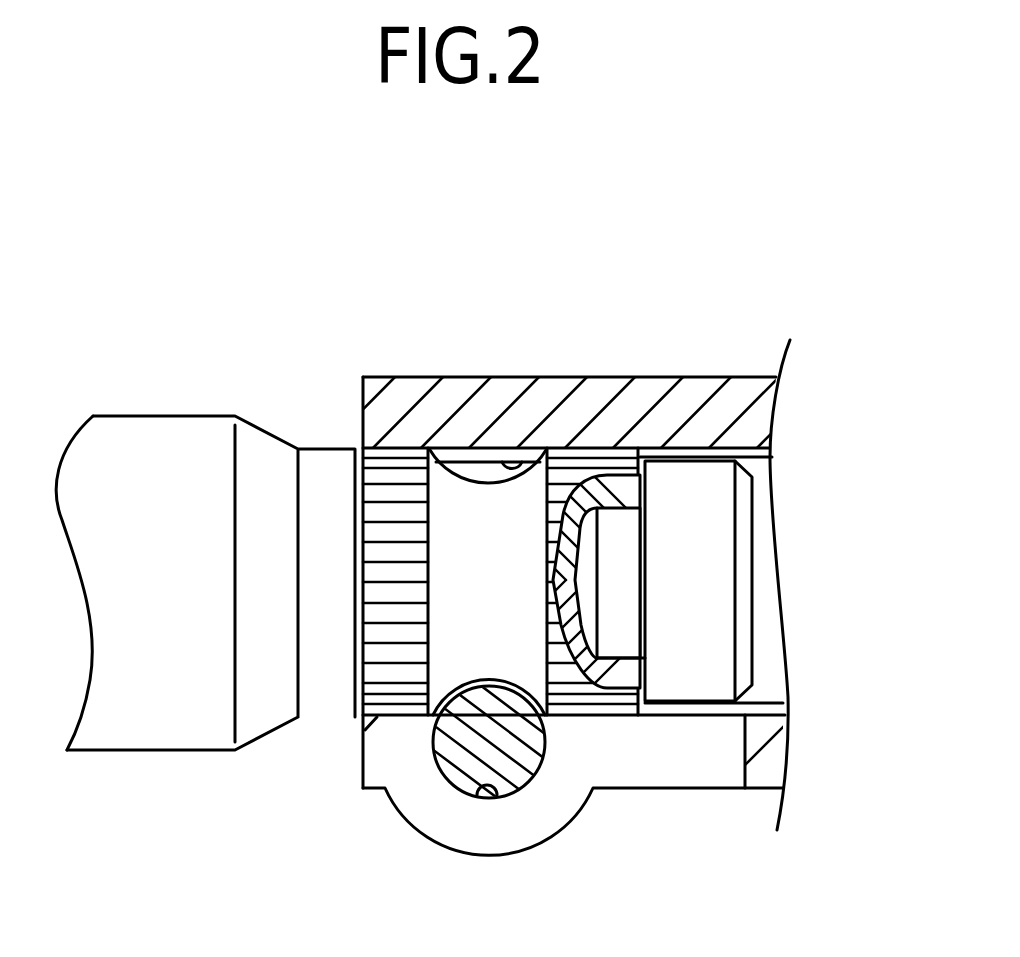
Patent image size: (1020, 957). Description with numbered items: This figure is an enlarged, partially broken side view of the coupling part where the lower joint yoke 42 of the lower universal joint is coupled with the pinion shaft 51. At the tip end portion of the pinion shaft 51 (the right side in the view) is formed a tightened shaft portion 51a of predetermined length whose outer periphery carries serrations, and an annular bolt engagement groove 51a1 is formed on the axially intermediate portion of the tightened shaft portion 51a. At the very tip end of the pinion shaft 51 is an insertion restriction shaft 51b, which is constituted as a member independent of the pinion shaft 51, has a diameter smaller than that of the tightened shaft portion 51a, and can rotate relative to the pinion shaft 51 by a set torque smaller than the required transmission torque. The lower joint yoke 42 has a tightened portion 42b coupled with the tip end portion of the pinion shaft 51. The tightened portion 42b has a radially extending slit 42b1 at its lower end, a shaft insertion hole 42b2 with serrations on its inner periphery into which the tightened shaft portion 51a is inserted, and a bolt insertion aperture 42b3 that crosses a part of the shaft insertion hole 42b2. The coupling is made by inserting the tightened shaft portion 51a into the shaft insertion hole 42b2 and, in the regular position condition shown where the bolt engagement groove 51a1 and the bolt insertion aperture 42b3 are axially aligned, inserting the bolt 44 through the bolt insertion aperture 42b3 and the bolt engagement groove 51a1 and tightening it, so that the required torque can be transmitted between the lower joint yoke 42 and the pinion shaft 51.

The lower joint yoke 42 is at (755, 385).
The tightened portion 42b is at (372, 412).
The slit 42b1 is at (617, 777).
The shaft insertion hole 42b2 is at (520, 467).
The bolt insertion aperture 42b3 is at (477, 790).
The bolt 44 is at (450, 780).
The pinion shaft 51 is at (132, 742).
The tightened shaft portion 51a is at (582, 465).
The bolt engagement groove 51a1 is at (477, 480).
The insertion restriction shaft 51b is at (722, 555).